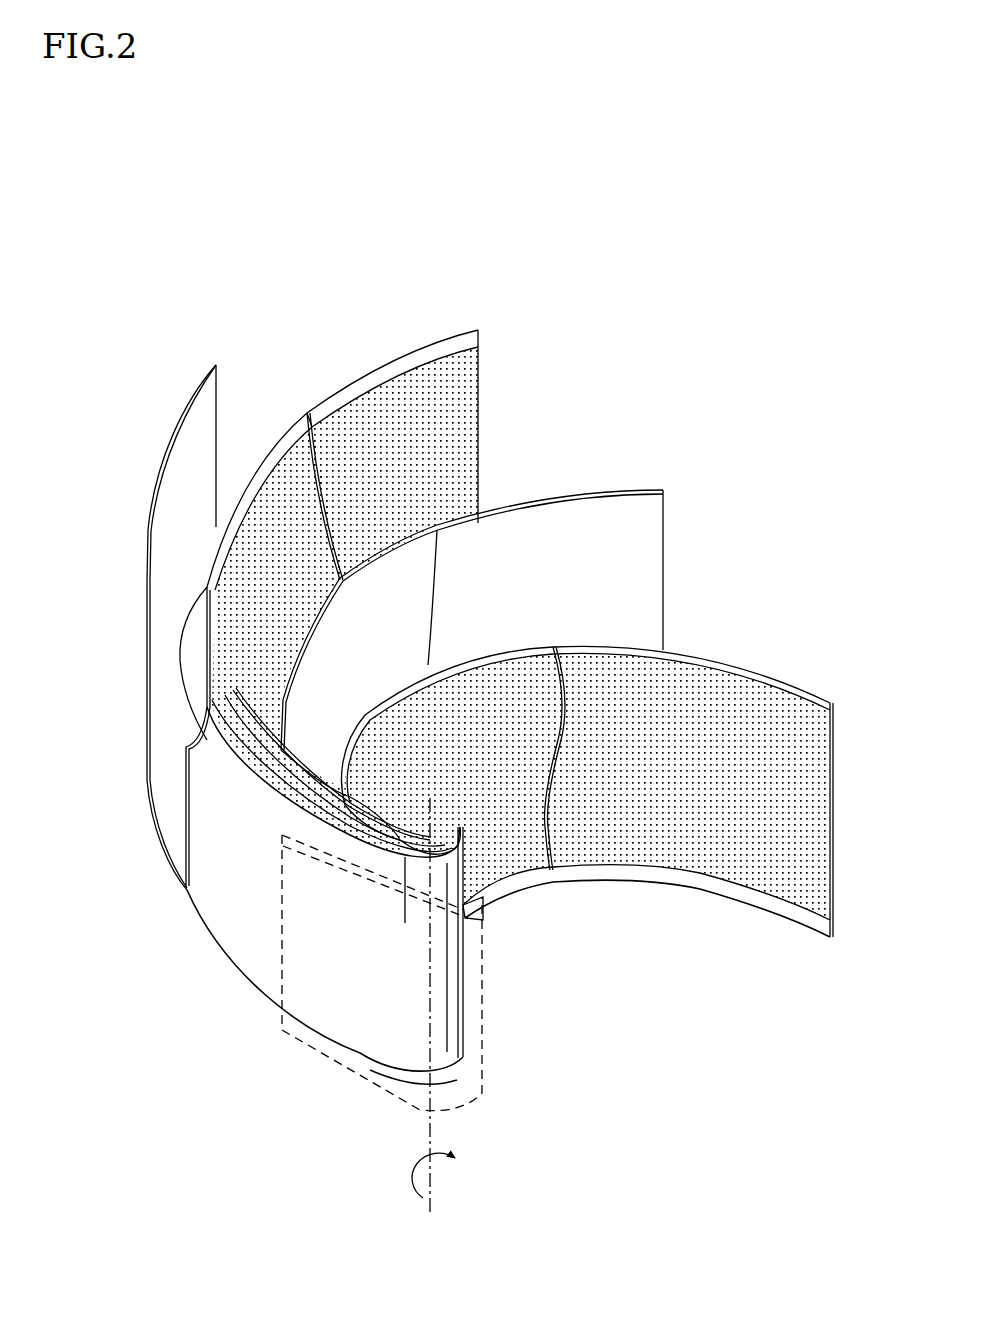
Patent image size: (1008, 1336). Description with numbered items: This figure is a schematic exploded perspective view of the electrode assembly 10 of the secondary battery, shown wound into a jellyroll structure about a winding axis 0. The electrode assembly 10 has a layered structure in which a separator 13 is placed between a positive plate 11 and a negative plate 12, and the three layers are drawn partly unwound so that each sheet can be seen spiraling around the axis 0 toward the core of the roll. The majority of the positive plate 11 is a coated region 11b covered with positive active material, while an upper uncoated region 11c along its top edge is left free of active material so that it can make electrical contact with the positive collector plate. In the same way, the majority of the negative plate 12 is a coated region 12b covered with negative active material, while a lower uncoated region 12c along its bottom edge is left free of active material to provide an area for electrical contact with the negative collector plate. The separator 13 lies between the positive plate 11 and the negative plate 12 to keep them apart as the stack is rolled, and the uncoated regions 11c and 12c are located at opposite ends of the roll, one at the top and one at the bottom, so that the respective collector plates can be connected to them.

The electrode assembly 10 is at (749, 374).
The positive plate 11 is at (483, 319).
The coated region 11b is at (455, 461).
The upper uncoated region 11c is at (410, 356).
The negative plate 12 is at (828, 685).
The coated region 12b is at (735, 700).
The lower uncoated region 12c is at (700, 892).
The separator 13 is at (666, 490).
The winding axis 0 is at (433, 1021).